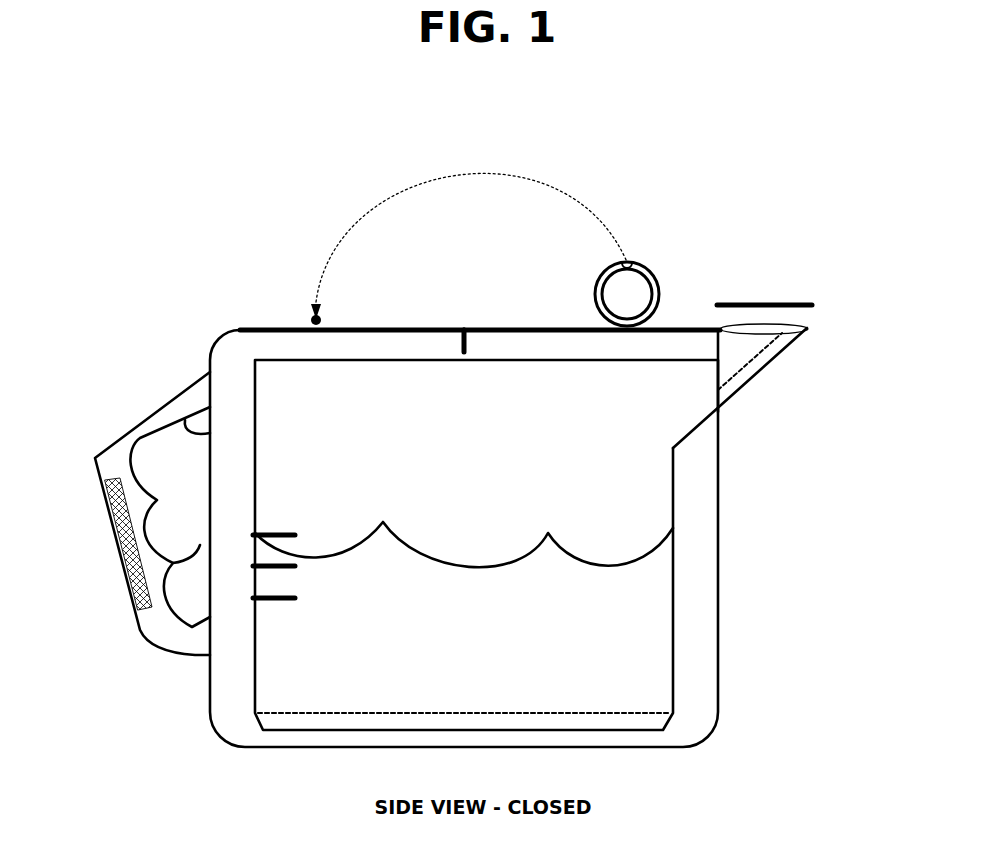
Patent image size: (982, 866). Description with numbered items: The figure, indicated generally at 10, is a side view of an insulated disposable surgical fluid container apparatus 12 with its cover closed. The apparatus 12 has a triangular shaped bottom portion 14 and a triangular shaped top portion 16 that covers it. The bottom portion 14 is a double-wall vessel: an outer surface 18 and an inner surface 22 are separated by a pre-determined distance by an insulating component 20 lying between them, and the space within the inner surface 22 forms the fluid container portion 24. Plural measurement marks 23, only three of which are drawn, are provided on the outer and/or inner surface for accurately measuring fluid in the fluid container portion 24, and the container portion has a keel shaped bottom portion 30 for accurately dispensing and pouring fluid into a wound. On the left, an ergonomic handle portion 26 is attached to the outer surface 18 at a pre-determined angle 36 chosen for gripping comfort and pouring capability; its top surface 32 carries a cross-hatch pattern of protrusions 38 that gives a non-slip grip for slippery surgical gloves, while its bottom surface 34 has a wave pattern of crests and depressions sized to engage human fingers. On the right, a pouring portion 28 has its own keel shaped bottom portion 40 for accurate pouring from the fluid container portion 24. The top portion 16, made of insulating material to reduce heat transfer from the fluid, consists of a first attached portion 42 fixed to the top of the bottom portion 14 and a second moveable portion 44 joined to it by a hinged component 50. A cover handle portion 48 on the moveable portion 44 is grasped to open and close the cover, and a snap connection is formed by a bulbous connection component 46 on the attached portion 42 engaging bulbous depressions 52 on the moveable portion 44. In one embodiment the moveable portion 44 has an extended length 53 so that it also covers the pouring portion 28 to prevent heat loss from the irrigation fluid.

The measuring cup assembly 10 is at (712, 112).
The insulated disposable surgical fluid container apparatus 12 is at (445, 294).
The triangular shaped bottom portion 14 is at (206, 354).
The triangular shaped top portion 16 is at (235, 325).
The outer surface 18 is at (208, 707).
The insulating component 20 is at (309, 357).
The inner surface 22 is at (256, 689).
The measurement marks 23 is at (290, 532).
The fluid container portion 24 is at (448, 455).
The ergonomic handle portion 26 is at (108, 433).
The pouring portion 28 is at (808, 329).
The keel shaped bottom portion 30 is at (668, 718).
The top surface 32 is at (160, 652).
The bottom surface 34 is at (200, 545).
The pre-determined angle 36 is at (192, 436).
The cross-hatch pattern of protrusions 38 is at (118, 557).
The keel shaped bottom portion of pouring portion 40 is at (760, 367).
The first attached portion 42 is at (367, 327).
The second moveable portion 44 is at (500, 327).
The connection component 46 is at (310, 320).
The cover handle portion 48 is at (661, 289).
The hinged component 50 is at (465, 350).
The bulbous depressions 52 is at (630, 258).
The extended length of second moveable portion 53 is at (752, 301).